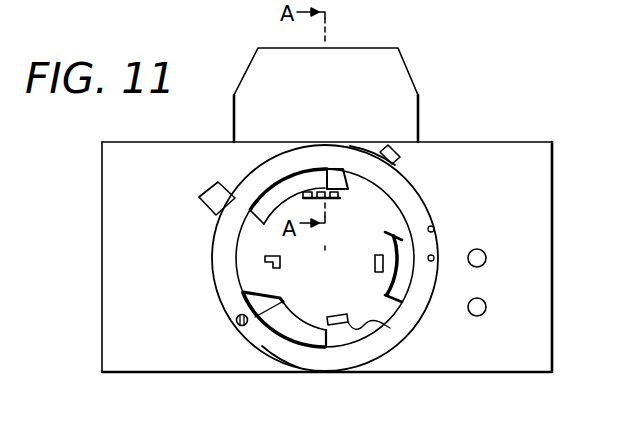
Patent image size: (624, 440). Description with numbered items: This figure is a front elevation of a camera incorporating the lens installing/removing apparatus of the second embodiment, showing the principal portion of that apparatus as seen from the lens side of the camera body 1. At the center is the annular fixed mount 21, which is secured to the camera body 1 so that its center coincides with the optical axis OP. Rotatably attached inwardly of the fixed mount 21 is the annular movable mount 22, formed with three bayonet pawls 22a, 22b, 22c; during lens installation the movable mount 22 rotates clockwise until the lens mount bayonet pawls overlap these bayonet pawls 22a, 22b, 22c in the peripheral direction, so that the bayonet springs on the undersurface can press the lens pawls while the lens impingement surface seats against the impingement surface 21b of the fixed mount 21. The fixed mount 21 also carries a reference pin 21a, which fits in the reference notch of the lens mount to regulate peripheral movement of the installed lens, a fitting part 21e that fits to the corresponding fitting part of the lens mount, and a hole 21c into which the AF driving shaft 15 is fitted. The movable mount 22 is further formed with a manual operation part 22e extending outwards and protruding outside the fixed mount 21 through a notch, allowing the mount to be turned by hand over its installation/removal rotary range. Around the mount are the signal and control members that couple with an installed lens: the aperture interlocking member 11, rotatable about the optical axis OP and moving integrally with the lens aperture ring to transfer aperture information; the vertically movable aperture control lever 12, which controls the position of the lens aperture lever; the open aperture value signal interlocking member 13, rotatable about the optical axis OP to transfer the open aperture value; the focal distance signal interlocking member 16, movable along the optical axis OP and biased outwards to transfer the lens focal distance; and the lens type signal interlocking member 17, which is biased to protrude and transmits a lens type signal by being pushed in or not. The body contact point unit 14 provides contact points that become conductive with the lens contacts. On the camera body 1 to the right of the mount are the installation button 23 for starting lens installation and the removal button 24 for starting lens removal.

The camera body 1 is at (493, 152).
The aperture interlocking member 11 is at (392, 153).
The aperture control lever 12 is at (266, 262).
The open aperture value signal interlocking member 13 is at (377, 343).
The body contact point unit 14 is at (337, 185).
The AF driving shaft 15 is at (236, 322).
The focal distance signal interlocking member 16 is at (376, 274).
The lens type signal interlocking member 17 is at (436, 228).
The fixed mount 21 is at (590, 0).
The reference pin 21a is at (436, 257).
The impingement surface 21b is at (270, 343).
The hole 21c is at (416, 83).
The fitting part 21e is at (340, 325).
The movable mount 22 is at (268, 232).
The bayonet pawl 22a is at (403, 236).
The bayonet pawl 22b is at (272, 190).
The bayonet pawl 22c is at (268, 342).
The manual operation part 22e is at (200, 201).
The installation button 23 is at (487, 258).
The removal button 24 is at (483, 314).
The optical axis OP is at (325, 258).